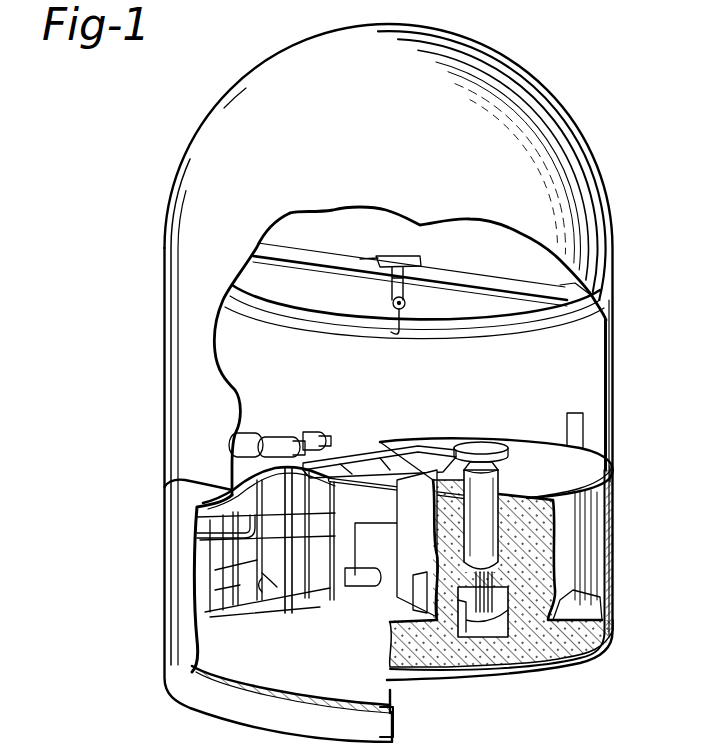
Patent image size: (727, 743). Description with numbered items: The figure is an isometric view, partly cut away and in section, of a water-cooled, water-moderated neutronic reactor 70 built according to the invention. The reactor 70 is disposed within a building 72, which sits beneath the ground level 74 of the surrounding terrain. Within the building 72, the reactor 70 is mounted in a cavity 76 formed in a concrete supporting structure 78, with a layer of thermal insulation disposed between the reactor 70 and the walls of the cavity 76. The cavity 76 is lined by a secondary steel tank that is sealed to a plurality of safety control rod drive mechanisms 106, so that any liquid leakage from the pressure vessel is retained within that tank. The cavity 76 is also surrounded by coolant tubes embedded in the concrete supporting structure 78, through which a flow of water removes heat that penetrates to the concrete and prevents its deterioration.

The building 72 is at (395, 184).
The ground level 74 is at (603, 437).
The concrete supporting structure 78 is at (590, 450).
The reactor 70 is at (492, 536).
The cavity 76 is at (508, 550).
The safety control rod drive mechanisms 106 is at (490, 606).